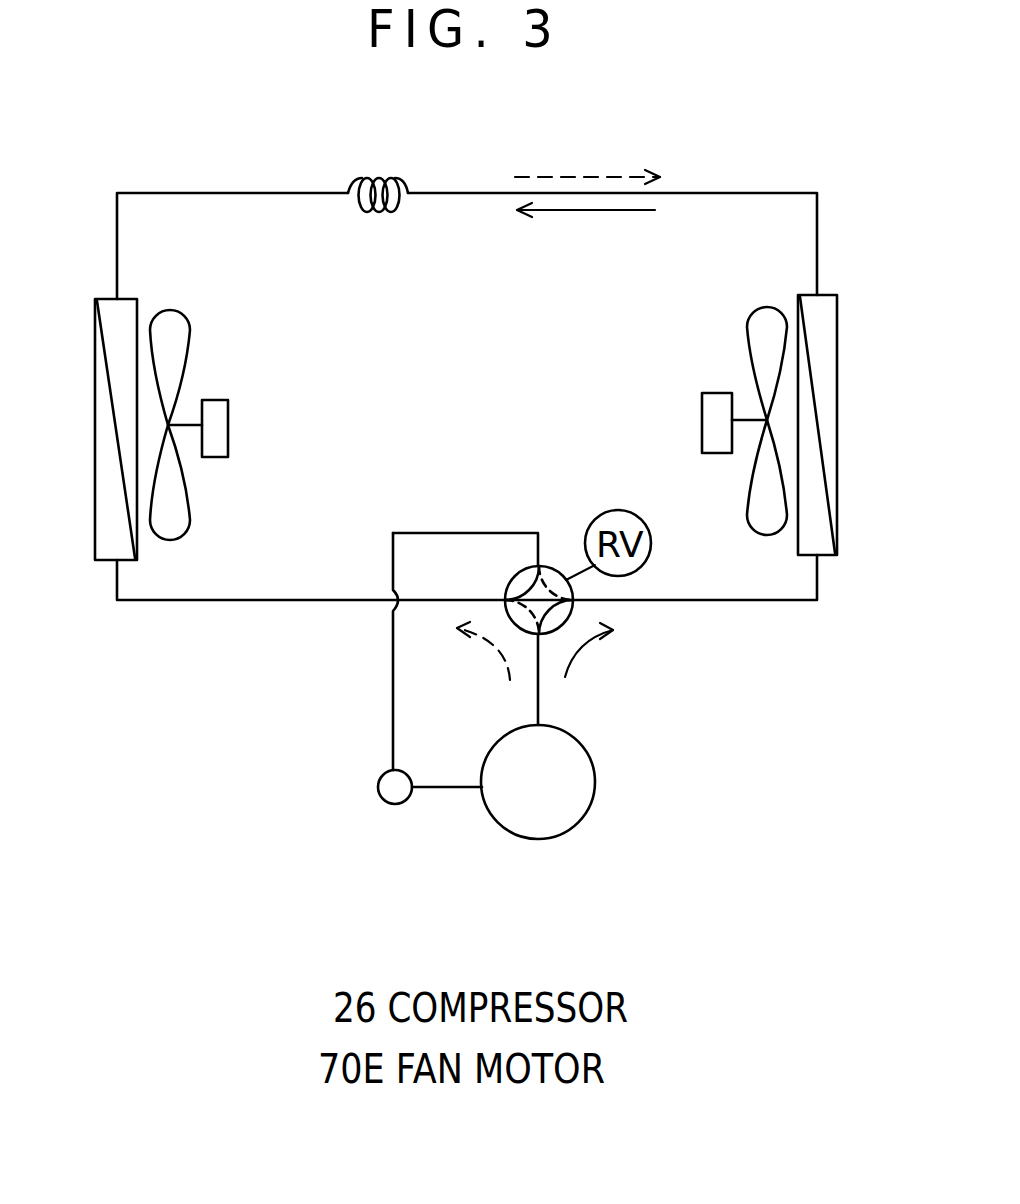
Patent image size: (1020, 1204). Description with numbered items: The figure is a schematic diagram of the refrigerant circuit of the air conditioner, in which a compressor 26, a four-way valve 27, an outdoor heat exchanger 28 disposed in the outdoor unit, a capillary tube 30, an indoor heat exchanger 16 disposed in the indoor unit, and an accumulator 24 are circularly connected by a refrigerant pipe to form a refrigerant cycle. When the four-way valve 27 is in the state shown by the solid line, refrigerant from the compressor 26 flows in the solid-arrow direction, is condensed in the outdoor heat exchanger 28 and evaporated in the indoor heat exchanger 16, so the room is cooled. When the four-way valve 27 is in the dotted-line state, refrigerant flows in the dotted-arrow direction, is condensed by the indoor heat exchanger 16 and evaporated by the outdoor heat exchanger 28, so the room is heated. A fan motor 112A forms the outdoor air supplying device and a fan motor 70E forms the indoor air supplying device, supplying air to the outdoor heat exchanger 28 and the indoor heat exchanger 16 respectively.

The indoor heat exchanger 16 is at (108, 518).
The accumulator 24 is at (393, 795).
The compressor 26 is at (545, 825).
The four-way valve 27 is at (556, 626).
The outdoor heat exchanger 28 is at (830, 458).
The capillary tube 30 is at (355, 186).
The fan motor 70E is at (220, 440).
The fan motor 112A is at (705, 433).